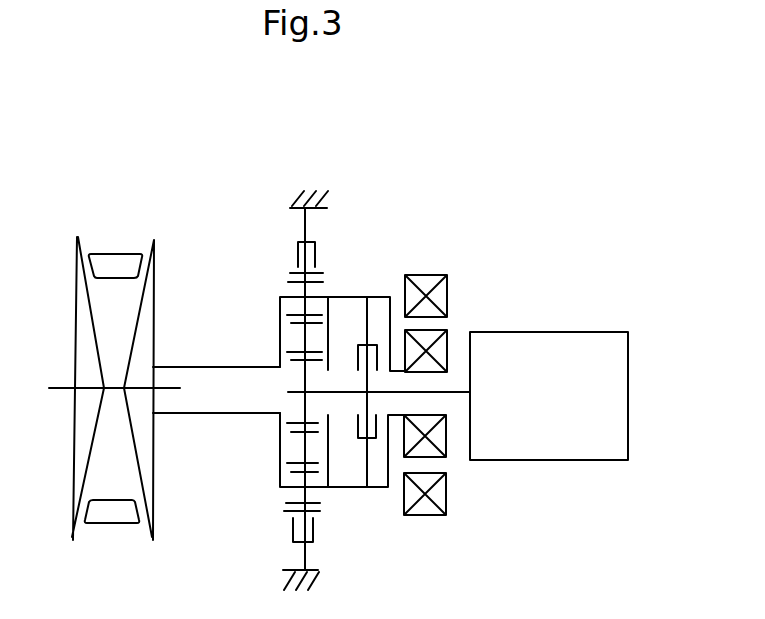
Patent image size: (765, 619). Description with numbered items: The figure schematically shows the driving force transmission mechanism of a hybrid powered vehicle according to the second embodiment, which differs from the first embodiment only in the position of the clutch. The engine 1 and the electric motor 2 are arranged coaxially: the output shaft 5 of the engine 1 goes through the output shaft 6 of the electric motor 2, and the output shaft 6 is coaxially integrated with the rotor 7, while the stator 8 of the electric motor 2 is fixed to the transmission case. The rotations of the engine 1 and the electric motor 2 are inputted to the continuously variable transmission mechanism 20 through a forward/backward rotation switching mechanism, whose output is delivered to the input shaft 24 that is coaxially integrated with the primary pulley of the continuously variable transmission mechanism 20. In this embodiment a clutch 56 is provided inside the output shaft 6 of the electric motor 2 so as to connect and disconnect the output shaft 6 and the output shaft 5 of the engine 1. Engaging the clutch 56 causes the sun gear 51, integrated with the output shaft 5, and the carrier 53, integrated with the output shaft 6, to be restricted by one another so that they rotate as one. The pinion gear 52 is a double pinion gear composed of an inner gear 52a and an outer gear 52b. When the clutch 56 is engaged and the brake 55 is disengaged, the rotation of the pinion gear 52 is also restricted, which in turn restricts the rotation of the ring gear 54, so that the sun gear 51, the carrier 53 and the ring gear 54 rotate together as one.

The engine 1 is at (580, 332).
The electric motor 2 is at (460, 304).
The output shaft of the engine 5 is at (458, 396).
The output shaft of the electric motor 6 is at (383, 296).
The rotor 7 is at (448, 340).
The stator 8 is at (437, 274).
The continuously variable transmission mechanism 20 is at (166, 241).
The input shaft 24 is at (186, 414).
The sun gear 51 is at (281, 369).
The pinion gear 52 is at (283, 453).
The inner gear 52a is at (290, 424).
The outer gear 52b is at (292, 503).
The carrier 53 is at (281, 323).
The ring gear 54 is at (292, 270).
The brake 55 is at (318, 264).
The clutch 56 is at (357, 338).